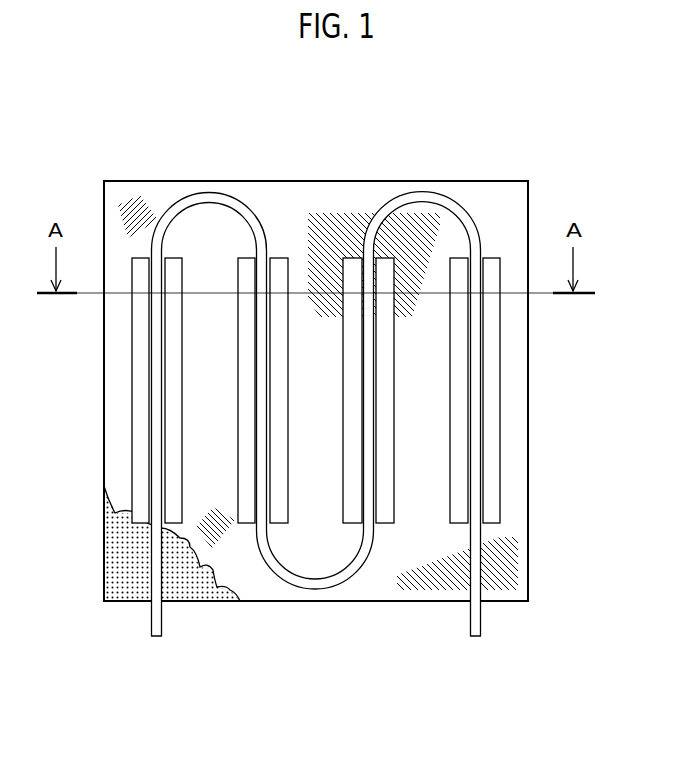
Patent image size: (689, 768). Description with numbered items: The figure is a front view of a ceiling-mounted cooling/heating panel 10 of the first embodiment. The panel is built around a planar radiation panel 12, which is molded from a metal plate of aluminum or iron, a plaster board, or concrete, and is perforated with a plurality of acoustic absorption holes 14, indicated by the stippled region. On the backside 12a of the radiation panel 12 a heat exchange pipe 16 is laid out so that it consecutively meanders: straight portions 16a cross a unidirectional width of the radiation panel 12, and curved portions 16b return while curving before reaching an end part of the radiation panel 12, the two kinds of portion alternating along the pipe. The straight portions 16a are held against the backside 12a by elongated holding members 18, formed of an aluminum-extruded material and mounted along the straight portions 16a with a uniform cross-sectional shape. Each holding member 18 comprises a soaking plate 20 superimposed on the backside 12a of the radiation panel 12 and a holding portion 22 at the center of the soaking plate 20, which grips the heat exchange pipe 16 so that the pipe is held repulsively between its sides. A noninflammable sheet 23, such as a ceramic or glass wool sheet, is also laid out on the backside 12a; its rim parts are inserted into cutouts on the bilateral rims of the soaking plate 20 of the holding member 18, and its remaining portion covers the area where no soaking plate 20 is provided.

The cooling/heating panel 10 is at (483, 167).
The radiation panel 12 is at (313, 198).
The backside of the radiation panel 12a is at (508, 422).
The acoustic absorption holes 14 is at (118, 563).
The heat exchange pipe 16 is at (475, 617).
The straight portions 16a is at (155, 470).
The curved portions 16b is at (188, 197).
The holding member 18 is at (128, 378).
The soaking plate 20 is at (492, 385).
The holding portion 22 is at (483, 462).
The noninflammable sheet 23 is at (210, 523).